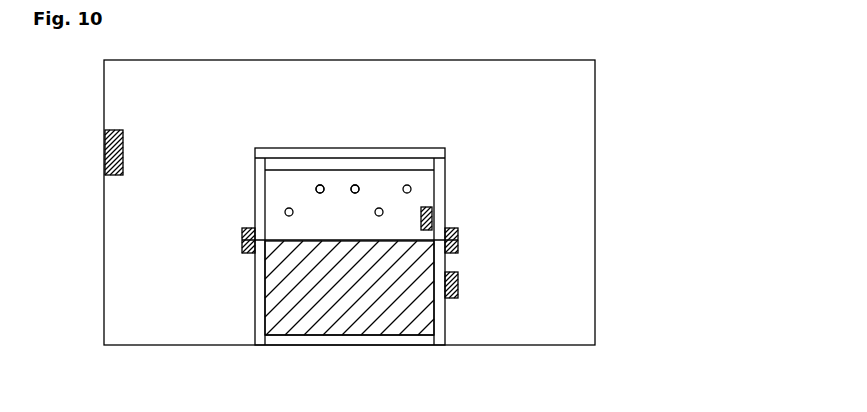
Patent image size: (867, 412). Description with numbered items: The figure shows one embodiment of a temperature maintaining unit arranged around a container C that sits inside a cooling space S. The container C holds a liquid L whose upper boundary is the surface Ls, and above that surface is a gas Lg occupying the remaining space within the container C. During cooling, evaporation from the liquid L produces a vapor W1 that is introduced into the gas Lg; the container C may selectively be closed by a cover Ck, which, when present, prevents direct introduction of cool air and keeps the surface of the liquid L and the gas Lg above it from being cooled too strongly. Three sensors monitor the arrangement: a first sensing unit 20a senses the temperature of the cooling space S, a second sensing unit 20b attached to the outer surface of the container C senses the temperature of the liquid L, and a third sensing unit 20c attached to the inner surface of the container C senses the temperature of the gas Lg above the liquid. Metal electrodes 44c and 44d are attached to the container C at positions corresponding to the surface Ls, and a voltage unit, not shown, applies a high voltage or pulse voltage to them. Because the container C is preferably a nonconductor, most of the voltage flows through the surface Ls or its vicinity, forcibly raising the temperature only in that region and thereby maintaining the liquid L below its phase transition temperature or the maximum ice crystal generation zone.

The cooling space S is at (349, 202).
The container C is at (440, 318).
The cover (lid) Ck is at (434, 148).
The gas Lg is at (348, 203).
The vapor W1 is at (355, 185).
The liquid L is at (285, 308).
The surface of the liquid Ls is at (282, 242).
The first sensing unit 20a is at (105, 149).
The second sensing unit 20b is at (458, 287).
The third sensing unit 20c is at (434, 216).
The metal electrode 44c is at (242, 243).
The metal electrode 44d is at (458, 238).